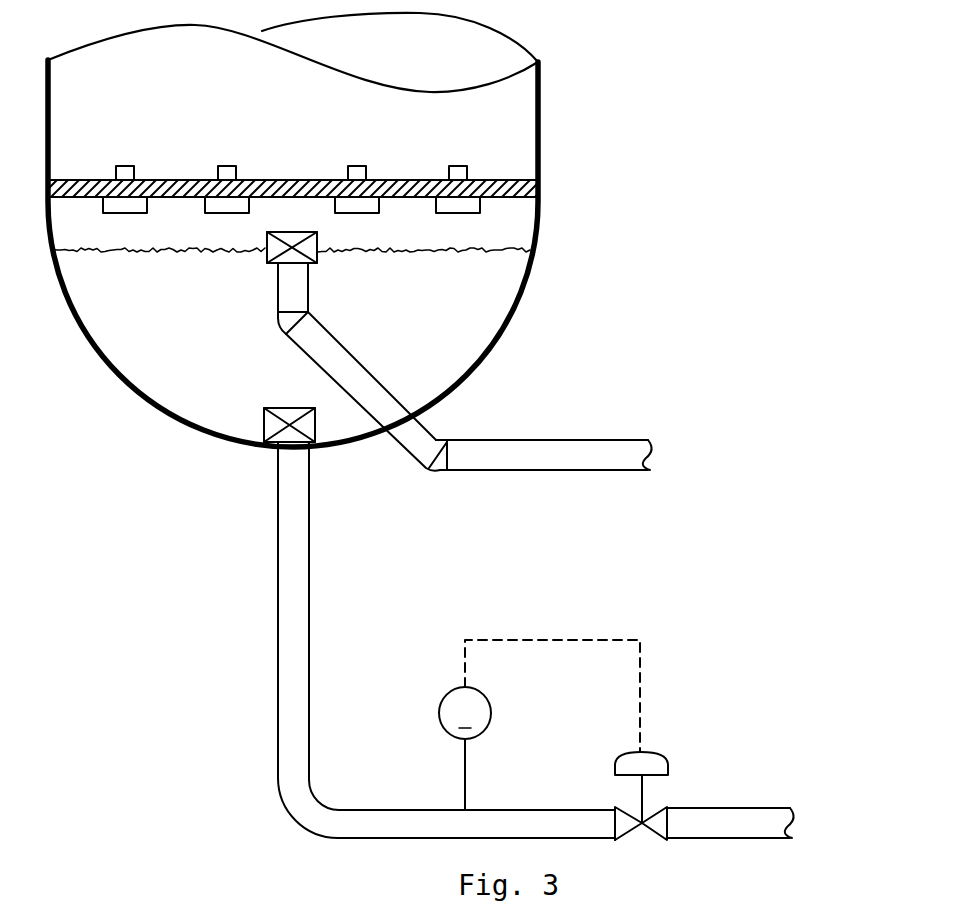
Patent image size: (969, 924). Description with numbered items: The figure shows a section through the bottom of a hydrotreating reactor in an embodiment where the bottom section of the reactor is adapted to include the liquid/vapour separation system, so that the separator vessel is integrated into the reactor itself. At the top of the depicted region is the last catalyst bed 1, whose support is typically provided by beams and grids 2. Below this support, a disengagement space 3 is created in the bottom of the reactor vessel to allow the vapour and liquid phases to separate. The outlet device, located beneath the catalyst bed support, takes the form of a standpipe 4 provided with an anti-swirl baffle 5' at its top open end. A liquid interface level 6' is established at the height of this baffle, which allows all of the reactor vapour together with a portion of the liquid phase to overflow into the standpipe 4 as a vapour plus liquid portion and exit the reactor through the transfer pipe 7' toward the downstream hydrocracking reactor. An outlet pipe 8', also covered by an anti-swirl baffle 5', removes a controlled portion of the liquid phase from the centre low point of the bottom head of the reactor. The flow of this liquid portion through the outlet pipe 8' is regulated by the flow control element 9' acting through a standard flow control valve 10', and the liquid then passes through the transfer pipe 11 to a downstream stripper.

The last catalyst bed 1 is at (415, 118).
The beams and grids 2 is at (470, 165).
The disengagement space 3 is at (470, 228).
The standpipe 4 is at (373, 373).
The anti-swirl baffle 5' is at (338, 337).
The liquid interface level 6' is at (325, 289).
The transfer pipe 7' is at (587, 446).
The outlet pipe 8' is at (446, 641).
The flow control element 9' is at (414, 748).
The flow control valve 10' is at (606, 740).
The transfer pipe 11 is at (795, 822).